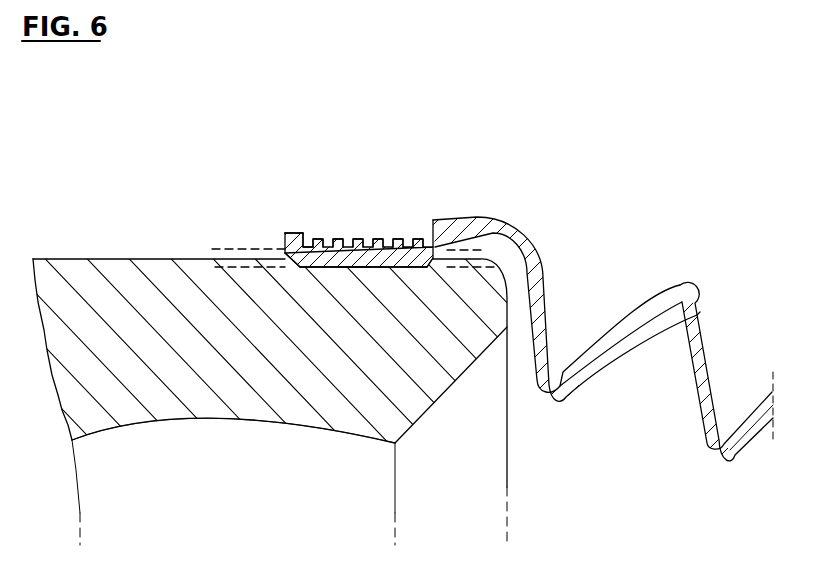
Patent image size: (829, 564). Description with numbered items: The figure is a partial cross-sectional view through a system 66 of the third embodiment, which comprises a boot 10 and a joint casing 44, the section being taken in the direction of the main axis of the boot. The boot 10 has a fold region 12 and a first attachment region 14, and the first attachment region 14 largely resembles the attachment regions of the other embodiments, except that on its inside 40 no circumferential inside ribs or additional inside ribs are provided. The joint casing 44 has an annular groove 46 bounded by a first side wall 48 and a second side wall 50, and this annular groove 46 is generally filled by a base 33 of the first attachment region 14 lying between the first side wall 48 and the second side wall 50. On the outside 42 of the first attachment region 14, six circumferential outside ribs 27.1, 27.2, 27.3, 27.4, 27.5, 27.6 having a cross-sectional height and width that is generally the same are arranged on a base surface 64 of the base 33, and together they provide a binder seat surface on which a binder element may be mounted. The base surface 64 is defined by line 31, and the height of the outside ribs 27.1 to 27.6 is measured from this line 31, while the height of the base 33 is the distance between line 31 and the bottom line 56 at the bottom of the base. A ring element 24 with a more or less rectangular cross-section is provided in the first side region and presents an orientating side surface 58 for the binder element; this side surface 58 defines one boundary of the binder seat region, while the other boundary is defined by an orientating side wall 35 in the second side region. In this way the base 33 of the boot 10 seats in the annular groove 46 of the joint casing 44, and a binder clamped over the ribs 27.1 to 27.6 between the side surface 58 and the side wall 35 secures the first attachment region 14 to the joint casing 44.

The boot 10 is at (669, 185).
The fold region 12 is at (728, 284).
The first attachment region 14 is at (340, 125).
The ring element 24 is at (288, 235).
The circumferential outside rib 27.1 is at (317, 238).
The circumferential outside rib 27.2 is at (336, 238).
The circumferential outside rib 27.3 is at (359, 238).
The circumferential outside rib 27.4 is at (379, 238).
The circumferential outside rib 27.5 is at (399, 238).
The circumferential outside rib 27.6 is at (424, 234).
The line 31 is at (226, 249).
The base 33 is at (355, 268).
The orientating side wall 35 is at (433, 218).
The inside 40 is at (430, 341).
The outside 42 is at (433, 120).
The joint casing 44 is at (233, 392).
The annular groove 46 is at (332, 269).
The first side wall 48 is at (283, 268).
The second side wall 50 is at (435, 267).
The bottom line 56 is at (298, 263).
The orientating side surface 58 is at (312, 240).
The base surface 64 is at (317, 238).
The system 66 is at (546, 123).